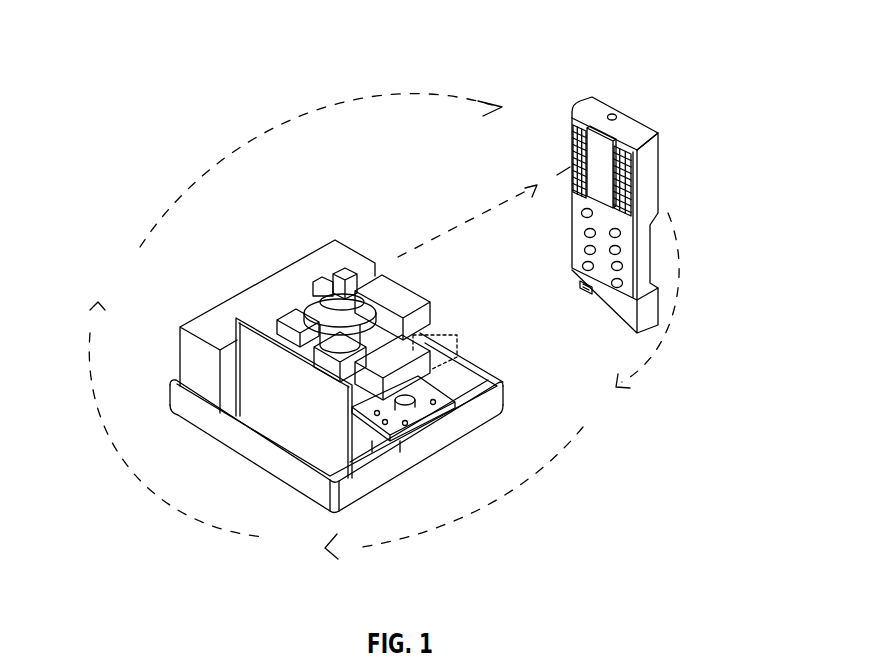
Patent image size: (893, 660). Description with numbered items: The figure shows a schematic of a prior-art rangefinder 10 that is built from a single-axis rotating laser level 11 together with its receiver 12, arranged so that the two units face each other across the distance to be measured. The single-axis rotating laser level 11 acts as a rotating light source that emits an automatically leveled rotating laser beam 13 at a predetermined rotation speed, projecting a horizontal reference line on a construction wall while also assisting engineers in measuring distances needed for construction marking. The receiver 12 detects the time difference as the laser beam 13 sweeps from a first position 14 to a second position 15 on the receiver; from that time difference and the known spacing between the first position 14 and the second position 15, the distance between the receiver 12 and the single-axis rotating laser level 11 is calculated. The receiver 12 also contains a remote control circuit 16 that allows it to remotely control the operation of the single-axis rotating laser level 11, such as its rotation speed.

The rangefinder 10 is at (538, 602).
The single-axis rotating laser level 11 is at (243, 313).
The receiver 12 is at (588, 100).
The laser beam 13 is at (537, 189).
The first position 14 is at (570, 157).
The second position 15 is at (637, 165).
The remote control circuit 16 is at (617, 283).